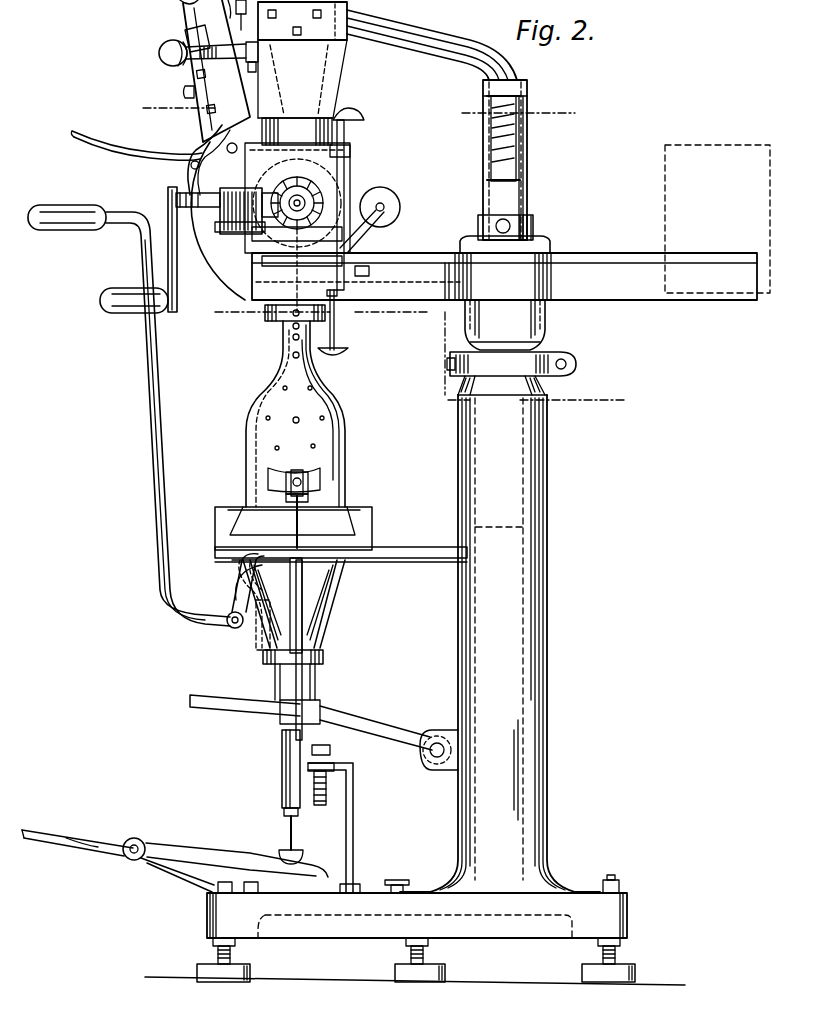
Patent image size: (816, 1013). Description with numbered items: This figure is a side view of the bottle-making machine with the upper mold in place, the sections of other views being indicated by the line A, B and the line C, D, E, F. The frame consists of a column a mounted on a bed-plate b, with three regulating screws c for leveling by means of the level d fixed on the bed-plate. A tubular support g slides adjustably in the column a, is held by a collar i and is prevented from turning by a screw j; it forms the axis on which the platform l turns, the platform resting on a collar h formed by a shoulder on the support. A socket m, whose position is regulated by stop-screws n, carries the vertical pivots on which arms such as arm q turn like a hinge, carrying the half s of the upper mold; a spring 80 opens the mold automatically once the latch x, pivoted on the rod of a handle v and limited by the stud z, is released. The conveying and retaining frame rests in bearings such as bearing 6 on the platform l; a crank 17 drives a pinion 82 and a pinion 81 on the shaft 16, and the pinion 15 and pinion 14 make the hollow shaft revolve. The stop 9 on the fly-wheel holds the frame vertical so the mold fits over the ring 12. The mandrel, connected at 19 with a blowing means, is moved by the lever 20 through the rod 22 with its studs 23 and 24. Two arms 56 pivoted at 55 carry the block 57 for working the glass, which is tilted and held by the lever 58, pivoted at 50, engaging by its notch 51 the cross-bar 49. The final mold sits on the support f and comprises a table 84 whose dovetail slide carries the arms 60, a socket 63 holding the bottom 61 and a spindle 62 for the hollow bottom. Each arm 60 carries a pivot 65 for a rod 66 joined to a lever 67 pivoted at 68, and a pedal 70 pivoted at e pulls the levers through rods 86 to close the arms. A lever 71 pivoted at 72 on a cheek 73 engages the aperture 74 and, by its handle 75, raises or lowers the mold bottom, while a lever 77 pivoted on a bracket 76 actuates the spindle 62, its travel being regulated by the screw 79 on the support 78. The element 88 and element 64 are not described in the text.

The half of the upper mold s is at (302, 60).
The ring 12 is at (305, 118).
The stud z is at (254, 70).
The block 57 is at (182, 10).
The latch x is at (198, 34).
The stop 9 is at (238, 15).
The handle v is at (160, 52).
The stud 88 is at (184, 92).
The section line A is at (168, 108).
The pinion 81 is at (132, 158).
The lever 58 is at (106, 152).
The pivot 50 is at (196, 140).
The cross-bar 49 is at (192, 168).
The notch 51 is at (221, 164).
The pinion 15 is at (330, 170).
The pinion 82 is at (236, 190).
The arm 56 is at (195, 232).
The shaft 16 is at (235, 240).
The pinion 14 is at (275, 248).
The bearing 6 is at (372, 222).
The rod 22 is at (347, 133).
The stud 23 is at (360, 118).
The platform l is at (504, 276).
The lever 20 is at (338, 331).
The stud 24 is at (348, 352).
The pivot 55 is at (282, 322).
The section line C is at (311, 323).
The blowing connection 19 is at (318, 372).
The arm 60 is at (295, 392).
The valve 64 is at (318, 476).
The pivot 65 is at (284, 480).
The rod 66 is at (310, 490).
The table 84 is at (218, 530).
The support f is at (341, 544).
The pivot 68 is at (330, 565).
The bottom of the mold 61 is at (318, 585).
The socket 63 is at (318, 628).
The rod 86 is at (303, 684).
The spindle 62 is at (284, 766).
The screw 79 is at (330, 782).
The support 78 is at (354, 806).
The pedal 70 is at (225, 706).
The pivot e is at (434, 760).
The handle 75 is at (75, 230).
The lever 71 is at (152, 468).
The crank 17 is at (118, 312).
The cheek 73 is at (238, 600).
The lever 67 is at (250, 562).
The pivot 72 is at (228, 628).
The aperture 74 is at (262, 640).
The bracket 76 is at (137, 846).
The lever 77 is at (212, 858).
The arm q is at (432, 45).
The spring 80 is at (478, 63).
The socket or bush m is at (510, 193).
The section line B is at (523, 138).
The stop-screw n is at (485, 227).
The tubular support g is at (522, 496).
The section line D is at (437, 352).
The collar h is at (545, 336).
The collar i is at (565, 374).
The screw j is at (458, 378).
The section line E is at (446, 409).
The section line F is at (577, 409).
The column a is at (512, 764).
The bed-plate b is at (417, 906).
The regulating pin or screw c is at (236, 946).
The spirit or water level d is at (398, 880).